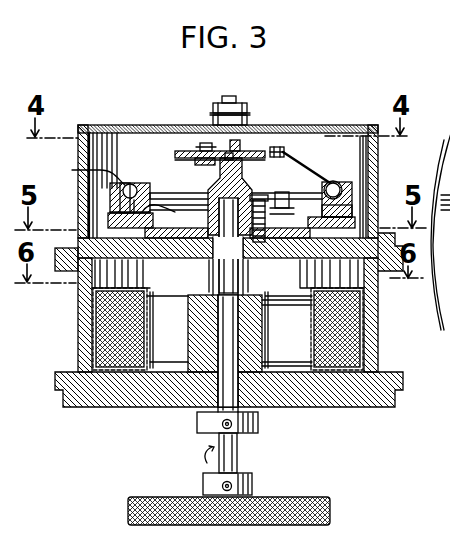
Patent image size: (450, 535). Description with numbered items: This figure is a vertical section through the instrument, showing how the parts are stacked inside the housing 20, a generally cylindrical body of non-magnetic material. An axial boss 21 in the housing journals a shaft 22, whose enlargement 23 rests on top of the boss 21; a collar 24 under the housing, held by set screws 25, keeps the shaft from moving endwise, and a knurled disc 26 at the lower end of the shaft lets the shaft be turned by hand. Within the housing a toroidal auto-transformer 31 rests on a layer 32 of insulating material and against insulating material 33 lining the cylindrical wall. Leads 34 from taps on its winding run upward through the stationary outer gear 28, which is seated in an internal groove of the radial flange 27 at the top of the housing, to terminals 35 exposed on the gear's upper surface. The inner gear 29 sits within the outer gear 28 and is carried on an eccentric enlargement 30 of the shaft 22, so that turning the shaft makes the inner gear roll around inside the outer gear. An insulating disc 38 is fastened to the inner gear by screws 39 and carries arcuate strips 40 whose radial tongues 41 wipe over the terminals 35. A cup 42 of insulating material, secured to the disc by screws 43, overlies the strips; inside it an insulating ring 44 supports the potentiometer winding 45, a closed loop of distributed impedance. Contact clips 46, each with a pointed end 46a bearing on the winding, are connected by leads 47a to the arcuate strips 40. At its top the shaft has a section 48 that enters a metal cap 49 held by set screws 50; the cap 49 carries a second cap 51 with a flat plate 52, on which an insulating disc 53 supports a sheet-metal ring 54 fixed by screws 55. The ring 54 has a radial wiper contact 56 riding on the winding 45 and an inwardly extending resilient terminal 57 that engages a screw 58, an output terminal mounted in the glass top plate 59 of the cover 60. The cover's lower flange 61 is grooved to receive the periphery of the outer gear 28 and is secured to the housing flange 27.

The housing 20 is at (372, 346).
The axial boss 21 is at (256, 338).
The shaft 22 is at (222, 357).
The enlargement 23 is at (268, 318).
The collar 24 is at (210, 424).
The set screws 25 is at (234, 430).
The disc 26 is at (296, 505).
The radial flange 27 is at (60, 258).
The outer gear 28 is at (82, 298).
The inner gear 29 is at (150, 296).
The enlargement 30 is at (235, 246).
The auto-transformer 31 is at (146, 335).
The layer of insulating material 32 is at (298, 370).
The insulating material 33 is at (367, 322).
The leads 34 is at (146, 292).
The terminals 35 is at (125, 232).
The disc 38 is at (224, 257).
The screws 39 is at (302, 292).
The arcuate strips 40 is at (331, 182).
The radial tongues 41 is at (100, 213).
The cup 42 is at (352, 203).
The screws 43 is at (266, 200).
The ring 44 is at (118, 207).
The potentiometer winding 45 is at (112, 193).
The contact clips 46 is at (446, 158).
The pointed end 46a is at (445, 289).
The leads 47a is at (444, 300).
The section 48 is at (170, 193).
The metal cap 49 is at (190, 194).
The set screws 50 is at (275, 200).
The second cap 51 is at (215, 177).
The flat plate 52 is at (181, 149).
The disc 53 is at (196, 143).
The ring 54 is at (262, 150).
The screws 55 is at (284, 149).
The wiper contact 56 is at (306, 165).
The resilient terminal 57 is at (241, 147).
The screw 58 is at (228, 96).
The top plate 59 is at (348, 113).
The cover 60 is at (84, 160).
The flange 61 is at (74, 242).